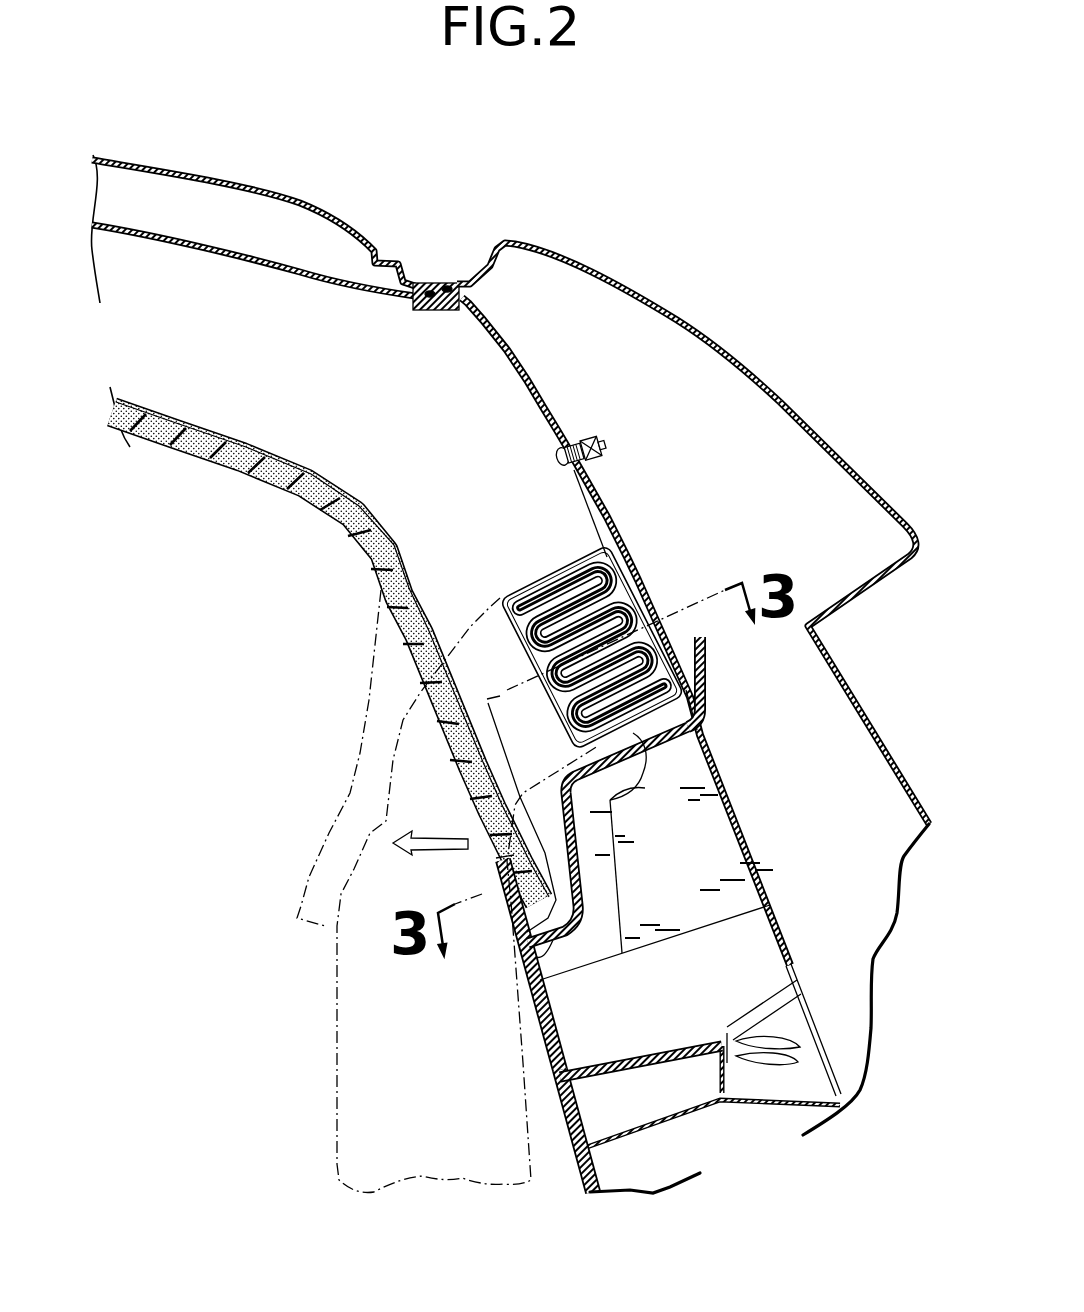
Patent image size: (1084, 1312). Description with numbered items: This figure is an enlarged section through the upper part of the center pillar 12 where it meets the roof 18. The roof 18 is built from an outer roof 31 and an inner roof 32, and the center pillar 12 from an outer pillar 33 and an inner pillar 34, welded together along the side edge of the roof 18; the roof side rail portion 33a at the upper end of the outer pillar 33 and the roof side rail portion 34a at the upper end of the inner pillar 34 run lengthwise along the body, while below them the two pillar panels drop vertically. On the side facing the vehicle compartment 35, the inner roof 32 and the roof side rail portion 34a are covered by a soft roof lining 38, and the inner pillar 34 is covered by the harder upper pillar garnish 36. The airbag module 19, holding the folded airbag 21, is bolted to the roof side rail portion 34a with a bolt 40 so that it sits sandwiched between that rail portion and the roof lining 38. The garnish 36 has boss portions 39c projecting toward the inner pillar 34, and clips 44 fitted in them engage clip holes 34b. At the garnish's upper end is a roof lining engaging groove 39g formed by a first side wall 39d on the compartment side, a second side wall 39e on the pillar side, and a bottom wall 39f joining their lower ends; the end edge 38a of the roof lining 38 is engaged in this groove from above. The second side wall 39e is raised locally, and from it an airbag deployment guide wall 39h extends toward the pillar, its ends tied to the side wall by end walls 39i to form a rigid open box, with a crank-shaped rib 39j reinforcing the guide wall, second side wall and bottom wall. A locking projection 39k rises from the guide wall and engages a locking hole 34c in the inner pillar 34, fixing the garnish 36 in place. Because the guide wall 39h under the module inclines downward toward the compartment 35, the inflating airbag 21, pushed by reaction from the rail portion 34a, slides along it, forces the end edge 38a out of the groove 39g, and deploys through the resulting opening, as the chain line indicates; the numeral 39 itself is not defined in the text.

The center pillar 12 is at (693, 695).
The roof 18 is at (275, 198).
The airbag module 19 is at (563, 569).
The airbag 21 is at (500, 598).
The outer roof 31 is at (347, 224).
The inner roof 32 is at (402, 133).
The outer pillar 33 is at (693, 689).
The roof side rail portion 33a is at (678, 320).
The inner pillar 34 is at (651, 722).
The roof side rail portion 34a is at (611, 517).
The clip hole 34b is at (715, 1083).
The locking hole 34c is at (702, 730).
The vehicle compartment 35 is at (214, 776).
The upper pillar garnish 36 is at (512, 1057).
The roof lining 38 is at (331, 688).
The end edge 38a is at (540, 937).
The pillar garnish 39 is at (600, 915).
The boss portion 39c is at (641, 1038).
The first side wall 39d is at (497, 874).
The second side wall 39e is at (558, 813).
The bottom wall 39f is at (546, 975).
The roof lining engaging groove 39g is at (563, 935).
The airbag deployment guide wall 39h is at (643, 780).
The end wall 39i is at (700, 893).
The crank-shaped rib 39j is at (606, 846).
The locking projection 39k is at (710, 670).
The bolt 40 is at (553, 460).
The clip 44 is at (736, 1043).